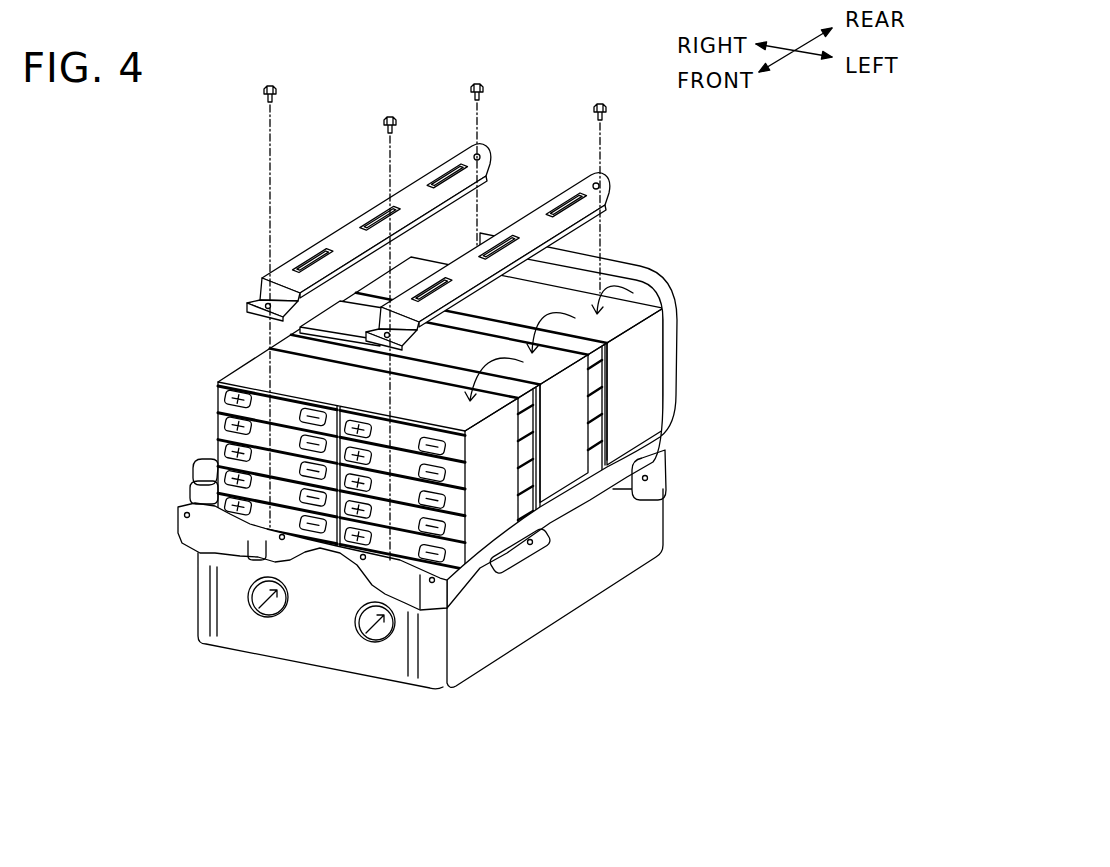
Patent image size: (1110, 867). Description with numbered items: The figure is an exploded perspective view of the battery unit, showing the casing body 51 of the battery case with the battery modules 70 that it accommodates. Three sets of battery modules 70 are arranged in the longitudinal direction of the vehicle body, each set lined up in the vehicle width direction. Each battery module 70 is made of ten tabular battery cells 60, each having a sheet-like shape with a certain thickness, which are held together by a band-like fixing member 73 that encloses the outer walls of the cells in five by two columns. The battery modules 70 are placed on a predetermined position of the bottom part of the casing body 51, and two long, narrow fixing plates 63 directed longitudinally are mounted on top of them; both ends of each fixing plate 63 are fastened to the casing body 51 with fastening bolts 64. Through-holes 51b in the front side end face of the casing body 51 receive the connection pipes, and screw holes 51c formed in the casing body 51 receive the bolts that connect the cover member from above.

The casing body 51 is at (507, 622).
The through-holes 51b is at (293, 646).
The screw hole 51c is at (417, 636).
The battery cells 60 is at (385, 413).
The fixing plate 63 is at (428, 247).
The fastening bolts 64 is at (427, 299).
The battery modules 70 is at (603, 405).
The fixing member 73 is at (610, 460).